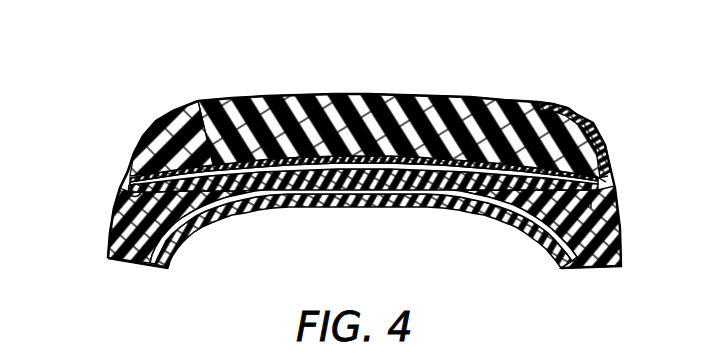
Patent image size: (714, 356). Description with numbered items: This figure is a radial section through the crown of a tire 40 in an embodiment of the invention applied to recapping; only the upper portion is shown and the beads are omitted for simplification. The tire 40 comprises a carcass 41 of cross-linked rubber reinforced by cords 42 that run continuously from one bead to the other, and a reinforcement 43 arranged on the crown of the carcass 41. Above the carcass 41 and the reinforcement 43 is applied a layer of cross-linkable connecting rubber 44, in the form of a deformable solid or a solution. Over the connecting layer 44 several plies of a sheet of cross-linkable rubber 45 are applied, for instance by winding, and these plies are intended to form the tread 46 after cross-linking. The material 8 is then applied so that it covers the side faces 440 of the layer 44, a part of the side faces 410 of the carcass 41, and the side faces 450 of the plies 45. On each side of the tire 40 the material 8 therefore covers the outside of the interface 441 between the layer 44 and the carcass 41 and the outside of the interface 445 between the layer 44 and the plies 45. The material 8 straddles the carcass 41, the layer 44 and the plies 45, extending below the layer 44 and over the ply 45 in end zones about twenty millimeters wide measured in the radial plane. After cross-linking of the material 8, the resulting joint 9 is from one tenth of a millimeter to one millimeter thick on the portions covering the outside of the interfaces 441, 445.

The tire 40 is at (604, 128).
The material 8 is at (120, 155).
The joint 9 is at (600, 167).
The carcass 41 is at (478, 202).
The cords 42 is at (230, 193).
The reinforcement 43 is at (353, 160).
The layer of cross-linkable connecting rubber 44 is at (610, 220).
The plies of a sheet of cross-linkable rubber 45 is at (465, 92).
The tread 46 is at (390, 83).
The side faces of the carcass 410 is at (100, 225).
The side faces of the layer 440 is at (113, 187).
The interface between the layer and the carcass 441 is at (583, 200).
The interface between the layer and the plies 445 is at (513, 100).
The side faces of the plies 450 is at (213, 97).